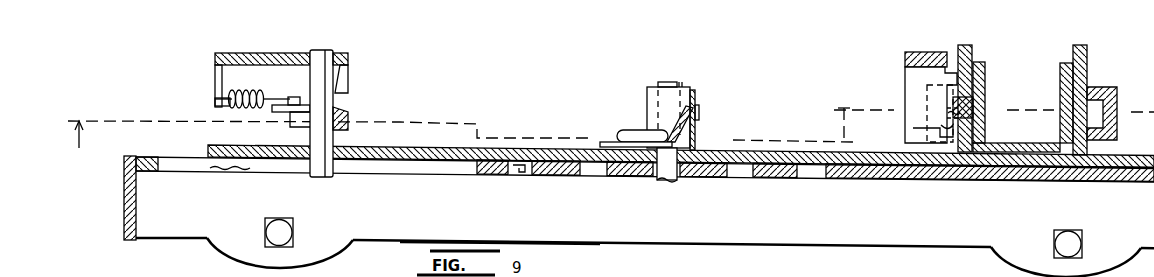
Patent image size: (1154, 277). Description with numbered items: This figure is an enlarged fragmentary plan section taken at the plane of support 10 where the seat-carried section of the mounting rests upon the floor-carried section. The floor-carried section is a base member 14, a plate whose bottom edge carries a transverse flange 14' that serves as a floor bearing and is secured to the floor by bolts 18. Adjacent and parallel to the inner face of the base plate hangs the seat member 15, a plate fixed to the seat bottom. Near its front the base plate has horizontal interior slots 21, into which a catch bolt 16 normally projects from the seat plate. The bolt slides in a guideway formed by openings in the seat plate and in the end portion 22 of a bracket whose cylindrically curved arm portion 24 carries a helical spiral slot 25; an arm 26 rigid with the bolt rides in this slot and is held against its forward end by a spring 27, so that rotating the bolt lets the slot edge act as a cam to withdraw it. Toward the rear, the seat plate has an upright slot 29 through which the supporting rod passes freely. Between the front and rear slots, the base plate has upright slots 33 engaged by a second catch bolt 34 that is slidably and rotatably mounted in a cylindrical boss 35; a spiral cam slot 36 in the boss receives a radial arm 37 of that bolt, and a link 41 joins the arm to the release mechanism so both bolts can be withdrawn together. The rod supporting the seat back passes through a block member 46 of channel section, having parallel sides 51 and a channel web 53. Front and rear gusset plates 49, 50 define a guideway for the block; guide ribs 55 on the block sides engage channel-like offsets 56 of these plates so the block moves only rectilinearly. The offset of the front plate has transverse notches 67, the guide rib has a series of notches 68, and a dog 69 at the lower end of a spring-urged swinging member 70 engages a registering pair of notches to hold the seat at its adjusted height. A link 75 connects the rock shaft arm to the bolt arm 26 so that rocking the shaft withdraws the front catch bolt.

The plane of support 10 is at (77, 143).
The base member 14 is at (615, 216).
The flange 14' is at (500, 220).
The seat member 15 is at (211, 151).
The catch bolt 16 is at (320, 58).
The bolt 18 is at (294, 233).
The slot 21 is at (236, 170).
The bracket end portion 22 is at (272, 60).
The arm portion 24 is at (348, 81).
The spiral slot 25 is at (350, 100).
The bolt arm 26 is at (298, 125).
The spring 27 is at (252, 89).
The upright slot 29 is at (1018, 178).
The slot 33 is at (660, 180).
The catch bolt 34 is at (672, 83).
The boss 35 is at (696, 101).
The spiral cam slot 36 is at (700, 117).
The arm 37 is at (637, 130).
The link 41 is at (609, 142).
The block member 46 is at (1053, 97).
The gusset plate 49 is at (952, 89).
The gusset plate 50 is at (1088, 50).
The block side 51 is at (986, 67).
The channel web 53 is at (1030, 142).
The guide rib 55 is at (975, 103).
The offset 56 is at (930, 146).
The notch 67 is at (913, 129).
The notch 68 is at (975, 114).
The dog 69 is at (906, 91).
The swinging member 70 is at (906, 56).
The link 75 is at (300, 96).